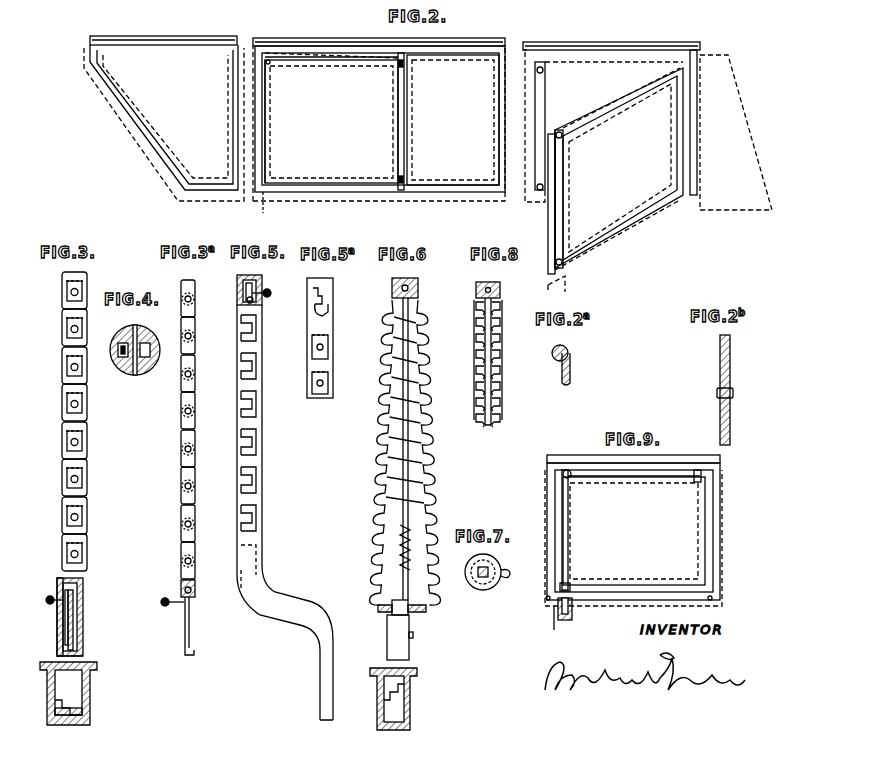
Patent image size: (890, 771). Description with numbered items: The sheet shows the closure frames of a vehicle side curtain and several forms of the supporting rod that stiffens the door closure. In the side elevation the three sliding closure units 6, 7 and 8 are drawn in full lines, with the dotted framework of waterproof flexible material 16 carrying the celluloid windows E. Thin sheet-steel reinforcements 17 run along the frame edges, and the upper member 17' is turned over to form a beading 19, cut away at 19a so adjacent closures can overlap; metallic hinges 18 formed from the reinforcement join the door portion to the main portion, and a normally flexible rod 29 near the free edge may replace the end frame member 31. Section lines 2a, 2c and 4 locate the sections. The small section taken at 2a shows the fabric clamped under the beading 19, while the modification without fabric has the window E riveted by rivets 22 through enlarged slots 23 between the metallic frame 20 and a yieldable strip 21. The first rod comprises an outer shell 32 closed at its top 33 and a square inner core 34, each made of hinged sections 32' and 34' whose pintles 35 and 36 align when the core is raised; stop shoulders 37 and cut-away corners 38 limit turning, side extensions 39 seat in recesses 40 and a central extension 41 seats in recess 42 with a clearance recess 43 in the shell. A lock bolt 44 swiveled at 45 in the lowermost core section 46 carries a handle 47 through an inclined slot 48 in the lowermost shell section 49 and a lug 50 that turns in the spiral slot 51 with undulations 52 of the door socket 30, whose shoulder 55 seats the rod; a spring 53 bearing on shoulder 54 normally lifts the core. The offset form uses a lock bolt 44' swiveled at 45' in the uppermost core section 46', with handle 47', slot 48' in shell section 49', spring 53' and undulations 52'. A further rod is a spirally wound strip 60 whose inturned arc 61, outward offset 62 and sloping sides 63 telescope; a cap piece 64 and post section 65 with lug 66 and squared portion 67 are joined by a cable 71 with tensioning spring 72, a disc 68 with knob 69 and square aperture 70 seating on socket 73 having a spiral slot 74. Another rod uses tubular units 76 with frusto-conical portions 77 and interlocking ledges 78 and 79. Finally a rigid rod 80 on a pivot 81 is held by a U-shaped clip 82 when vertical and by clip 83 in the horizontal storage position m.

In FIG. 2, the section line 2a is at (587, 75).
In FIG. 2, the section line 2c is at (770, 148).
In FIG. 3, the section line 4 is at (62, 454).
In FIG. 2, the closure unit 6 is at (609, 126).
In FIG. 2, the closure unit 7 is at (331, 118).
In FIG. 6, the closure unit 7 is at (378, 606).
In FIG. 2, the closure unit 8 is at (164, 118).
In FIG. 2, the waterproof flexible material 16 is at (582, 118).
In FIG. 2A, the waterproof flexible material 16 is at (572, 372).
In FIG. 2, the flexible elastic reinforcement 17 is at (331, 74).
In FIG. 9, the flexible elastic reinforcement 17 is at (634, 493).
In FIG. 2, the upper member of metal reinforcing frame 17' is at (621, 91).
In FIG. 2, the metallic hinge 18 is at (404, 75).
In FIG. 2, the beading 19 is at (640, 42).
In FIG. 2A, the beading 19 is at (566, 347).
In FIG. 2, the cut-away portion of beading 19a is at (538, 44).
In FIG. 2B, the metallic frame 20 is at (731, 370).
In FIG. 2B, the strip 21 is at (720, 410).
In FIG. 2B, the rivet 22 is at (733, 396).
In FIG. 2B, the enlarged slot 23 is at (733, 390).
In FIG. 2B, the window E is at (731, 348).
In FIG. 2, the flexible rod 29 is at (268, 158).
In FIG. 3, the flexible rod 29 is at (58, 307).
In FIG. 3, the socket 30 is at (90, 680).
In FIG. 2, the end frame member 31 is at (558, 225).
In FIG. 3, the outer shell 32 is at (58, 515).
In FIG. 3, the shell section 32' is at (92, 549).
In FIG. 3, the top of shell 33 is at (80, 272).
In FIG. 3A, the inner core 34 is at (173, 523).
In FIG. 3A, the core section 34' is at (171, 556).
In FIG. 4, the shell hinge pintle 35 is at (138, 326).
In FIG. 4, the core hinge pintle 36 is at (150, 372).
In FIG. 3, the stop shoulder 37 is at (88, 488).
In FIG. 3A, the stop shoulder 37 is at (195, 484).
In FIG. 3, the cut-away corner 38 is at (63, 488).
In FIG. 3A, the cut-away corner 38 is at (181, 484).
In FIG. 3, the side extension 39 is at (88, 386).
In FIG. 4, the side extension 39 is at (118, 372).
In FIG. 3, the recess 40 is at (64, 385).
In FIG. 4, the recess 40 is at (125, 332).
In FIG. 3A, the central extension 41 is at (194, 355).
In FIG. 4, the central recess 42 is at (150, 350).
In FIG. 4, the shell recess 43 is at (118, 348).
In FIG. 3A, the lock bolt 44 is at (200, 626).
In FIG. 5, the lock bolt 44' is at (229, 292).
In FIG. 3A, the swivel 45 is at (204, 585).
In FIG. 5, the swivel 45' is at (272, 314).
In FIG. 3A, the lowermost core section 46 is at (171, 582).
In FIG. 5, the uppermost core section 46' is at (226, 311).
In FIG. 3, the operating handle 47 is at (42, 591).
In FIG. 3A, the operating handle 47 is at (166, 594).
In FIG. 5, the operating handle 47' is at (273, 293).
In FIG. 3, the inclined slot 48 is at (91, 620).
In FIG. 5, the inclined slot 48' is at (278, 308).
In FIG. 5A, the inclined slot 48' is at (336, 296).
In FIG. 3, the lowermost shell section 49 is at (86, 609).
In FIG. 5, the uppermost shell section 49' is at (223, 273).
In FIG. 3, the locking lug 50 is at (83, 652).
In FIG. 3, the spiral slot 51 is at (82, 700).
In FIG. 3, the undulating surface 52 is at (89, 712).
In FIG. 5A, the undulations 52' is at (337, 314).
In FIG. 3, the spring 53 is at (91, 617).
In FIG. 5, the spring 53' is at (266, 286).
In FIG. 3, the shoulder 54 is at (57, 636).
In FIG. 3, the shoulder 55 is at (47, 690).
In FIG. 6, the continuous metallic strip 60 is at (399, 452).
In FIG. 6, the inturned arc 61 is at (412, 360).
In FIG. 6, the outward offset 62 is at (392, 344).
In FIG. 6, the sides 63 is at (412, 422).
In FIG. 6, the cap piece 64 is at (415, 292).
In FIG. 6, the post section 65 is at (386, 642).
In FIG. 6, the locking lug 66 is at (414, 640).
In FIG. 6, the squared portion 67 is at (388, 622).
In FIG. 7, the squared portion 67 is at (482, 582).
In FIG. 6, the disc 68 is at (385, 604).
In FIG. 7, the disc 68 is at (496, 560).
In FIG. 6, the knob 69 is at (420, 612).
In FIG. 7, the knob 69 is at (507, 578).
In FIG. 7, the square aperture 70 is at (478, 570).
In FIG. 6, the flexible means of constant length 71 is at (410, 440).
In FIG. 6, the tensioning spring 72 is at (398, 535).
In FIG. 6, the socket 73 is at (404, 708).
In FIG. 6, the spiral undulating slot 74 is at (417, 680).
In FIG. 8, the tubular unit 76 is at (476, 392).
In FIG. 8, the frusto-conical portion 77 is at (478, 363).
In FIG. 8, the interlocking ledge 78 is at (478, 346).
In FIG. 8, the interlocking ledge 79 is at (476, 330).
In FIG. 9, the rigid rod 80 is at (572, 524).
In FIG. 9, the pivot 81 is at (570, 478).
In FIG. 9, the U-shaped clip 82 is at (572, 590).
In FIG. 9, the clip 83 is at (694, 480).
In FIG. 9, the storage position m is at (612, 478).